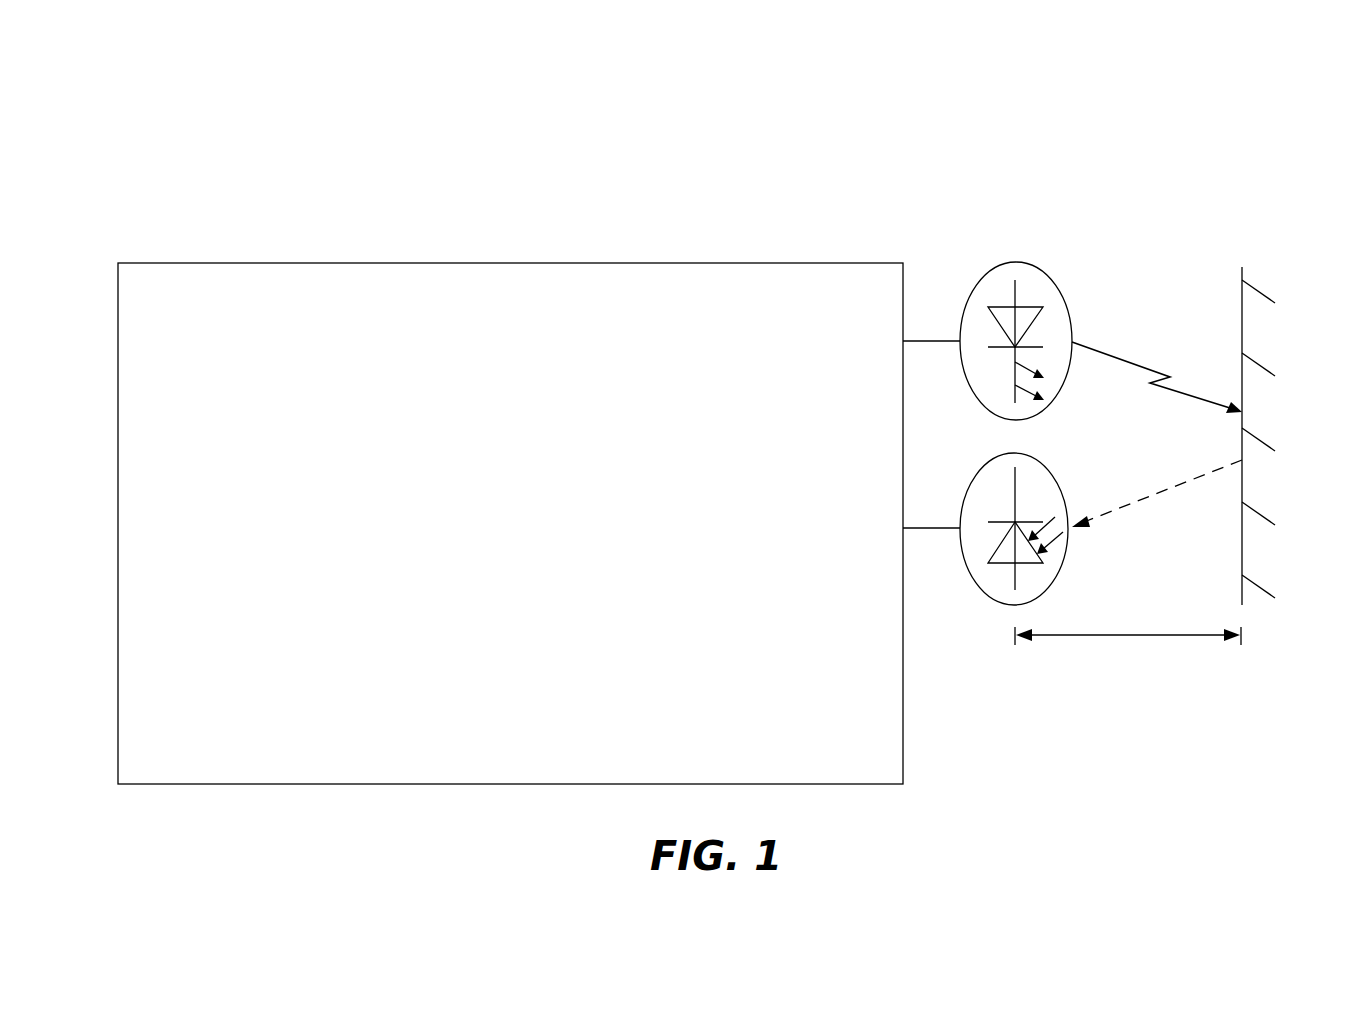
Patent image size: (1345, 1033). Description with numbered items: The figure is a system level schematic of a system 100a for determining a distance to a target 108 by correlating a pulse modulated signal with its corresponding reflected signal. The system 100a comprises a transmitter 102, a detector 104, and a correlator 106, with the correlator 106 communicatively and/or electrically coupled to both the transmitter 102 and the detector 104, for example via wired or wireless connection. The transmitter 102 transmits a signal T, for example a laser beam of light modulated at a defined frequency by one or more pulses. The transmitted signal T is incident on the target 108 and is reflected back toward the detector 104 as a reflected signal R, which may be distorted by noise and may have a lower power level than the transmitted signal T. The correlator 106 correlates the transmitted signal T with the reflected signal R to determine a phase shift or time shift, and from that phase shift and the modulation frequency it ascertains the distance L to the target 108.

The system 100a is at (905, 126).
The transmitter 102 is at (1055, 278).
The detector 104 is at (1045, 461).
The correlator 106 is at (298, 262).
The target 108 is at (1262, 293).
The transmitted signal T is at (1192, 395).
The reflected signal R is at (1193, 478).
The distance L is at (1128, 646).